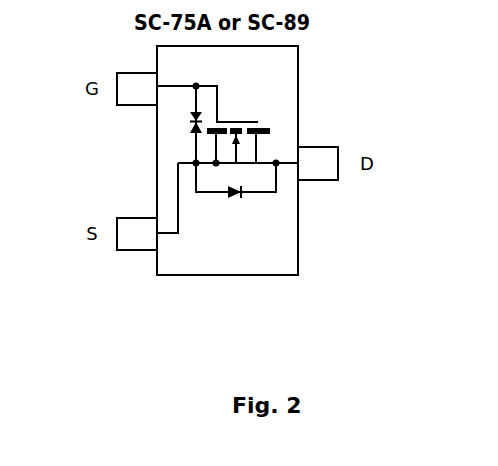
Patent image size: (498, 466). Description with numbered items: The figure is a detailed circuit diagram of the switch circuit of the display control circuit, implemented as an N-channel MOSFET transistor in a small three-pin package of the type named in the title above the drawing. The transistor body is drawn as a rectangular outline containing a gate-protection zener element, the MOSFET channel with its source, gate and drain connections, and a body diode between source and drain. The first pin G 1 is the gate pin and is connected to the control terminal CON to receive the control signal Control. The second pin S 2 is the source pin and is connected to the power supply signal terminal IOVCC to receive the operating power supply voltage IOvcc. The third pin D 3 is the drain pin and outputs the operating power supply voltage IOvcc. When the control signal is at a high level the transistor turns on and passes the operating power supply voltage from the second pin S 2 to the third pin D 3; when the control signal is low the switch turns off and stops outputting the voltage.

The first pin G 1 is at (187, 97).
The second pin S 2 is at (147, 206).
The third pin D 3 is at (297, 163).